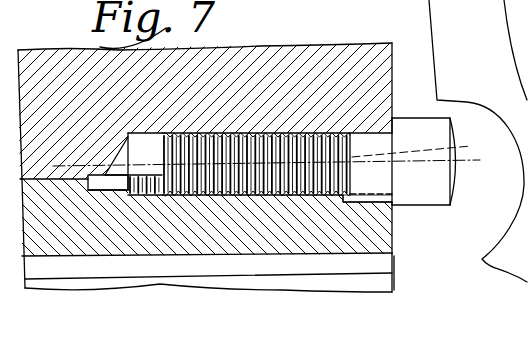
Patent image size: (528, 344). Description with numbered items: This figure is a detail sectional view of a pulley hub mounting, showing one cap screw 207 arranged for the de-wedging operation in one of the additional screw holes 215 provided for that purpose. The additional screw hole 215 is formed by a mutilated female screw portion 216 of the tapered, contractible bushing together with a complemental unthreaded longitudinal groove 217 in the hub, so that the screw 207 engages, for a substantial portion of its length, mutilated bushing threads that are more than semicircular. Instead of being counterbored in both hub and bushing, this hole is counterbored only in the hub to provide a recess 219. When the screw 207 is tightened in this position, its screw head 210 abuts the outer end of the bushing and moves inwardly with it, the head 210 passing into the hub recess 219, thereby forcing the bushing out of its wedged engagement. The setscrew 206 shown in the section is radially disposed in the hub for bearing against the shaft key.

The base plate 206 is at (361, 279).
The cap screw 207 is at (282, 191).
The screw head 210 is at (435, 174).
The additional screw hole 215 is at (218, 131).
The mutilated female screw portion 216 is at (153, 192).
The unthreaded longitudinal groove 217 is at (143, 147).
The recess 219 is at (371, 203).